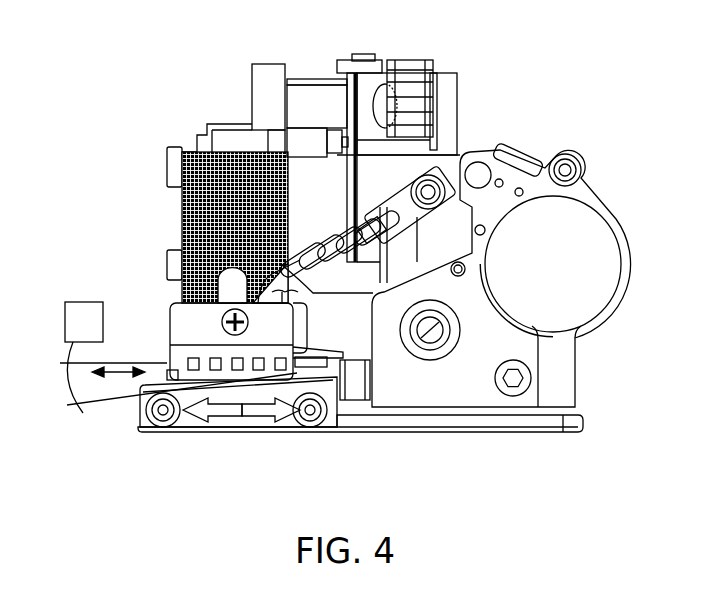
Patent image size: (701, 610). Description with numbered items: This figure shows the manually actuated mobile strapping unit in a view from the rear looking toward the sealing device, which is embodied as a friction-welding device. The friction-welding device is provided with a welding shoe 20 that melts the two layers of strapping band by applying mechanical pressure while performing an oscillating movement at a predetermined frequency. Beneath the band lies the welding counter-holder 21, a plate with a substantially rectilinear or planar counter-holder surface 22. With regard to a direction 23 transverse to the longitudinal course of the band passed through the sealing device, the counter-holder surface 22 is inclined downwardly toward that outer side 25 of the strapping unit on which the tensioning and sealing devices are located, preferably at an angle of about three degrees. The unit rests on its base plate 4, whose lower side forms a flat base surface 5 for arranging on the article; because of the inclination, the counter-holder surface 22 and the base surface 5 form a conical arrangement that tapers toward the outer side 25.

The base plate 4 is at (338, 410).
The base surface 5 is at (280, 440).
The welding shoe 20 is at (205, 360).
The welding counter-holder 21 is at (247, 422).
The counter-holder surface 22 is at (240, 388).
The transverse direction 23 is at (117, 370).
The outer side 25 is at (120, 423).